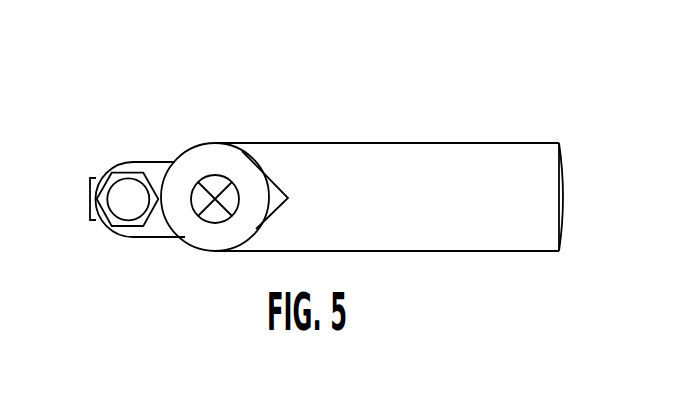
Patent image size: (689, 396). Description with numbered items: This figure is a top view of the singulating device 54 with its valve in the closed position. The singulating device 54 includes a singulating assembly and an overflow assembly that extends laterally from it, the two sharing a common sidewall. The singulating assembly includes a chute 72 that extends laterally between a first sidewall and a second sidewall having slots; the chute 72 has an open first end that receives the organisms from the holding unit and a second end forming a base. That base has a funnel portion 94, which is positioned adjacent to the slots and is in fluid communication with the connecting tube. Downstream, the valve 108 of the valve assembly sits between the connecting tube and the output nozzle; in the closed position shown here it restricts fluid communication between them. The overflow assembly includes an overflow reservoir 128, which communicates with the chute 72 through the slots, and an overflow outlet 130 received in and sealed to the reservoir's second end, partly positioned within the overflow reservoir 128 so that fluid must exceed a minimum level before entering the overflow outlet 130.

The singulating device 54 is at (480, 93).
The chute 72 is at (420, 243).
The funnel portion 94 is at (212, 160).
The valve 108 is at (215, 182).
The overflow reservoir 128 is at (163, 173).
The overflow outlet 130 is at (90, 210).